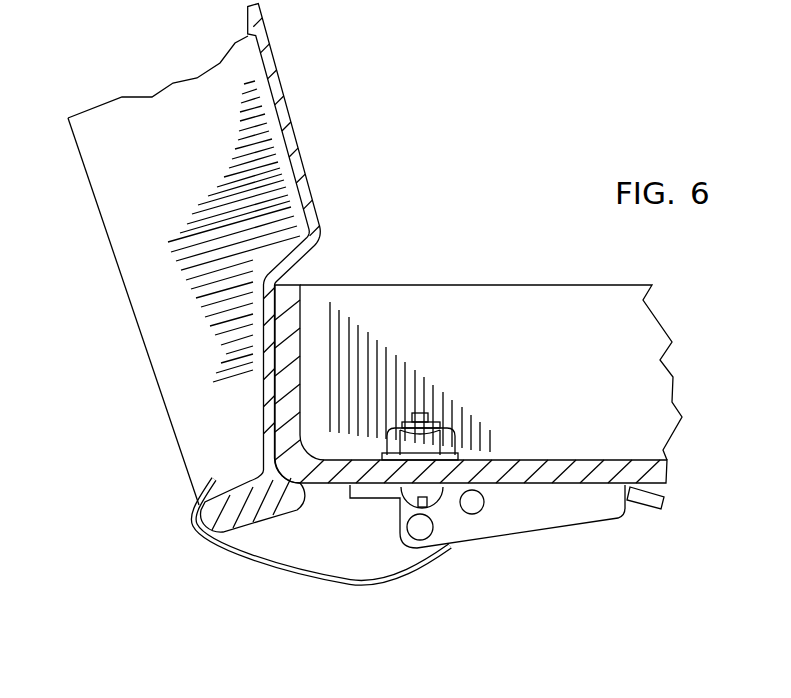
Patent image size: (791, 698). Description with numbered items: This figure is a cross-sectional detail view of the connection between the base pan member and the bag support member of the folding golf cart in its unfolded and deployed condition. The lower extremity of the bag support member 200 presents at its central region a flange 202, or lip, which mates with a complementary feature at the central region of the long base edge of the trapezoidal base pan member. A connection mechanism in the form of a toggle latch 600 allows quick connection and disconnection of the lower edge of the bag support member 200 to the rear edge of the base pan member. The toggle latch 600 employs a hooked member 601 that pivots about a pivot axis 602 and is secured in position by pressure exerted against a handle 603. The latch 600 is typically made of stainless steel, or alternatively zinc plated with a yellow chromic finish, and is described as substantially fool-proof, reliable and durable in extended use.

The bag support member 200 is at (178, 268).
The flange 202 is at (243, 490).
The toggle latch 600 is at (412, 565).
The hooked member 601 is at (237, 552).
The pivot axis 602 is at (484, 502).
The handle 603 is at (577, 515).